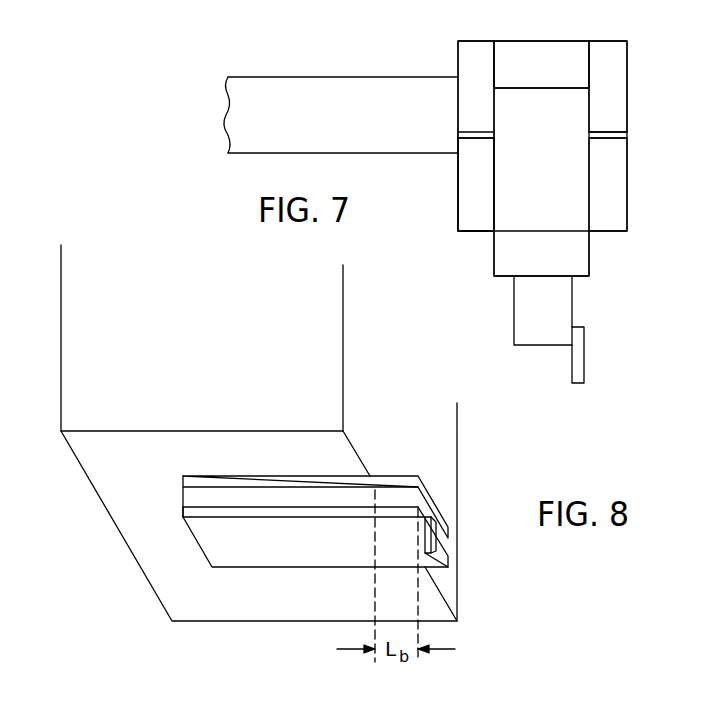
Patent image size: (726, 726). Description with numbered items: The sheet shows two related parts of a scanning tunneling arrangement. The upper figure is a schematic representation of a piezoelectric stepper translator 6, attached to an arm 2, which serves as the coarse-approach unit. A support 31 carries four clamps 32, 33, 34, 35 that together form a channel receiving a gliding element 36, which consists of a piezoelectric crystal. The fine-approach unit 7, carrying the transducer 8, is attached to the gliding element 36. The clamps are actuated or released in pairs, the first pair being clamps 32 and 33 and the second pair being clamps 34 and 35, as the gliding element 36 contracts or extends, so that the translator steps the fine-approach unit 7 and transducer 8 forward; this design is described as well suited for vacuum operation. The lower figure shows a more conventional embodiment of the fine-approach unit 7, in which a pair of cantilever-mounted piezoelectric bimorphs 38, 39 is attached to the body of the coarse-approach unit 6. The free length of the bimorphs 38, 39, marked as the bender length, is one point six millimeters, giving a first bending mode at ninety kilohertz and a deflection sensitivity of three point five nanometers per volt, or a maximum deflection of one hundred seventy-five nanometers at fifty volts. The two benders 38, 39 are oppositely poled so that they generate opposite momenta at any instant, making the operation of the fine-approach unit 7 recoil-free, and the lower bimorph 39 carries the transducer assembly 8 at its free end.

In FIG. 7, the arm 2 is at (288, 83).
In FIG. 7, the translator 6 is at (637, 147).
In FIG. 8, the translator 6 is at (146, 576).
In FIG. 7, the fine-approach unit 7 is at (526, 313).
In FIG. 8, the fine-approach unit 7 is at (442, 500).
In FIG. 7, the transducer 8 is at (580, 344).
In FIG. 8, the transducer 8 is at (433, 538).
In FIG. 7, the support 31 is at (533, 53).
In FIG. 7, the clamp 32 is at (462, 55).
In FIG. 7, the clamp 33 is at (619, 71).
In FIG. 7, the clamp 34 is at (469, 211).
In FIG. 7, the clamp 35 is at (618, 203).
In FIG. 7, the gliding element 36 is at (578, 255).
In FIG. 8, the piezoelectric bimorph 38 is at (186, 479).
In FIG. 8, the piezoelectric bimorph 39 is at (192, 512).